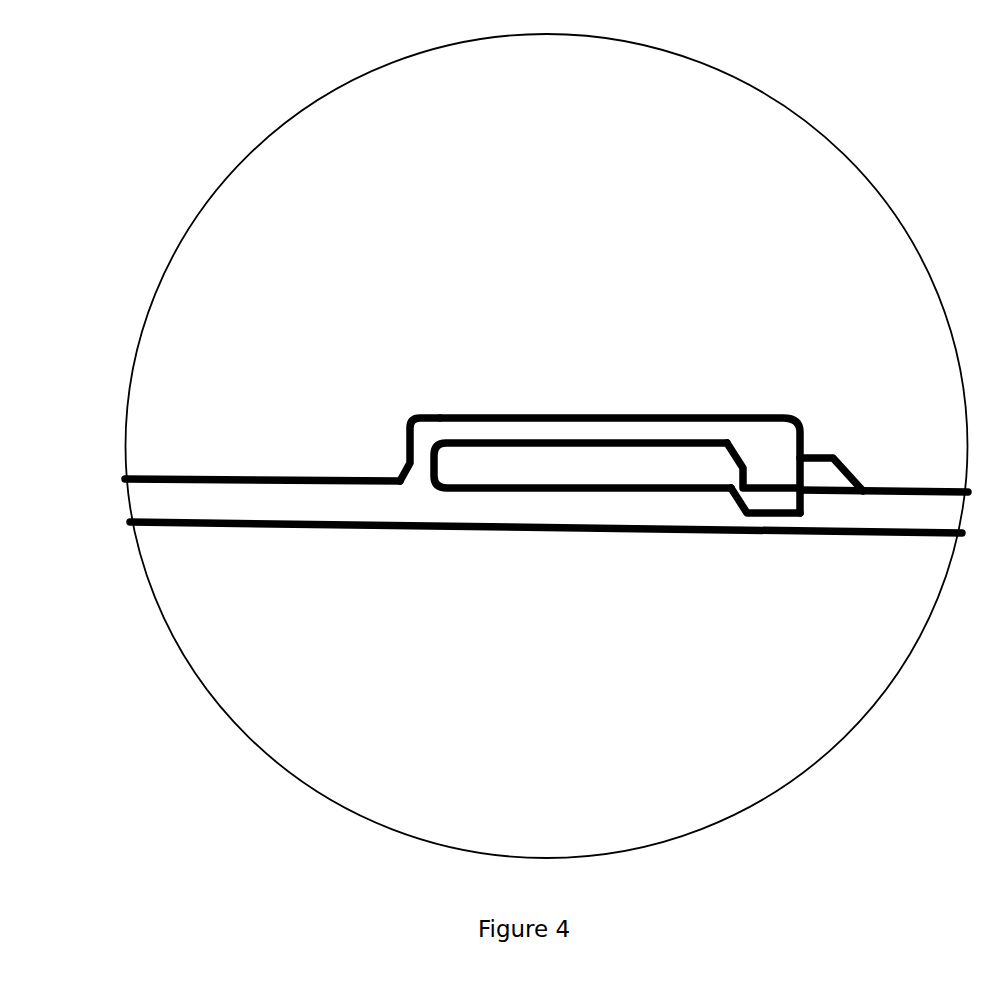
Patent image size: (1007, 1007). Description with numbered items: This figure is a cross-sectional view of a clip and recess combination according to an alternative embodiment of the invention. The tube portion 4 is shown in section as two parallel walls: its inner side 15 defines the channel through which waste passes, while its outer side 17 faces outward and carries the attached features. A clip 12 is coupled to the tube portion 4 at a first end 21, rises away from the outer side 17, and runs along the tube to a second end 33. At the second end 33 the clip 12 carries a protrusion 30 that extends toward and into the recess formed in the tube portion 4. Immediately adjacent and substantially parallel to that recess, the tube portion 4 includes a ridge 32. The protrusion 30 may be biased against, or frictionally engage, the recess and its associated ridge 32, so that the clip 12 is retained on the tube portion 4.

The tube portion 4 is at (143, 466).
The clip 12 is at (549, 378).
The inner side 15 is at (221, 526).
The outer side 17 is at (193, 476).
The first end 21 is at (405, 467).
The protrusion 30 is at (770, 478).
The ridge 32 is at (833, 477).
The second end 33 is at (745, 417).